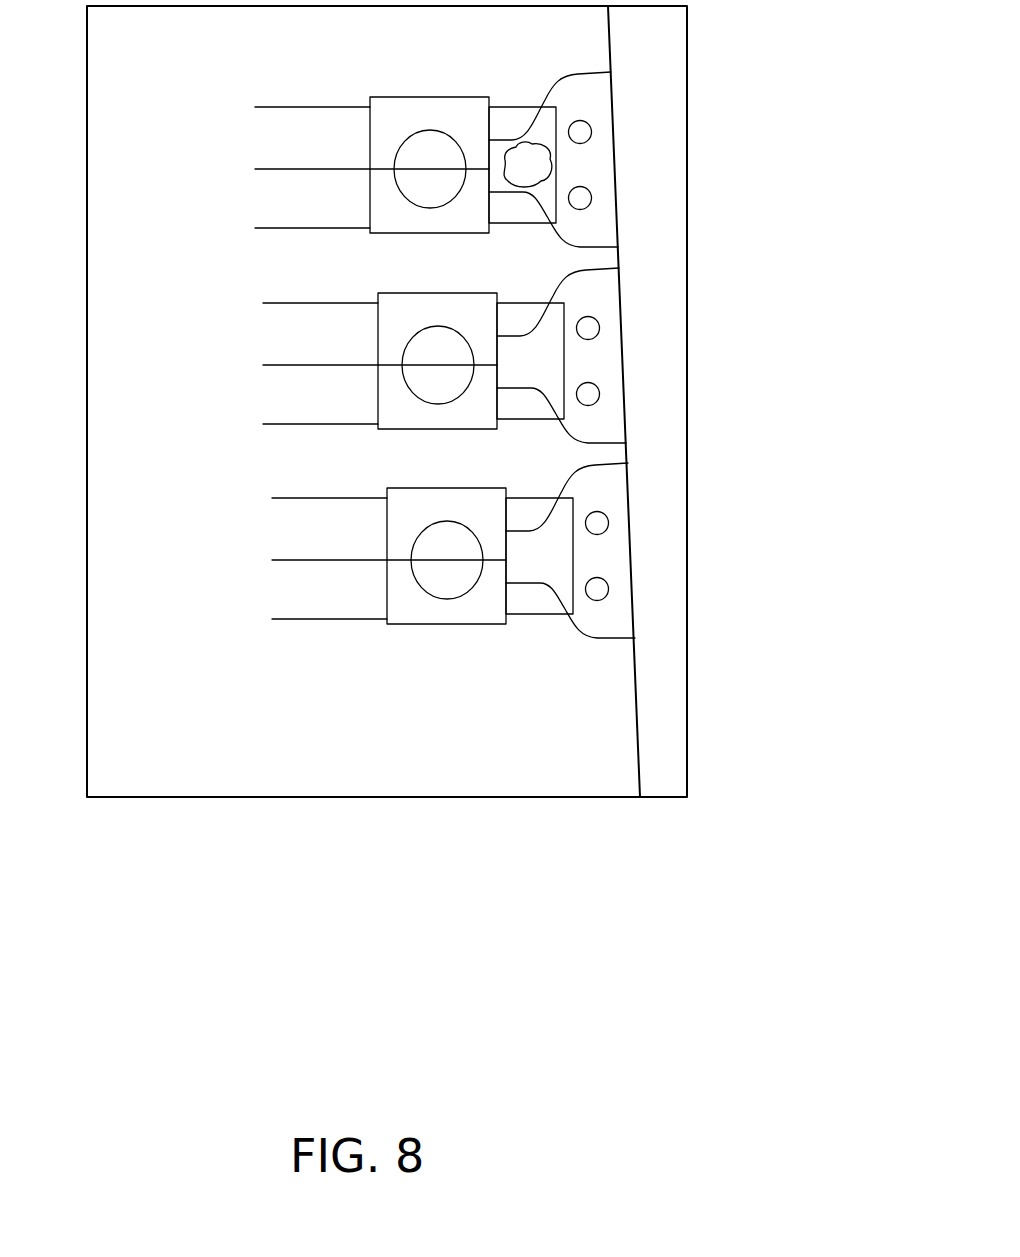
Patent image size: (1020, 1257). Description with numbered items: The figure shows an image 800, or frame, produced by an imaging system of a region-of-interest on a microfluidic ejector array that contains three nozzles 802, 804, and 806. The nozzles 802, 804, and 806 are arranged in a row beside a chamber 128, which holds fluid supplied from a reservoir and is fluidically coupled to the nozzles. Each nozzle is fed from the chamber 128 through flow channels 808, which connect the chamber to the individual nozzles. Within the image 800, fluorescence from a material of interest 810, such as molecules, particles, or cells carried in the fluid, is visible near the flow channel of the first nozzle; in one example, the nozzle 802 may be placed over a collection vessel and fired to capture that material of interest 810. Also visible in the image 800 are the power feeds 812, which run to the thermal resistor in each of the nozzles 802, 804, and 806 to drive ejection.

The image 800 is at (437, 565).
The chamber 128 is at (670, 273).
The nozzle 802 is at (440, 131).
The nozzle 804 is at (440, 328).
The nozzle 806 is at (445, 523).
The flow channels 808 is at (573, 652).
The material of interest 810 is at (551, 159).
The power feeds 812 is at (395, 643).